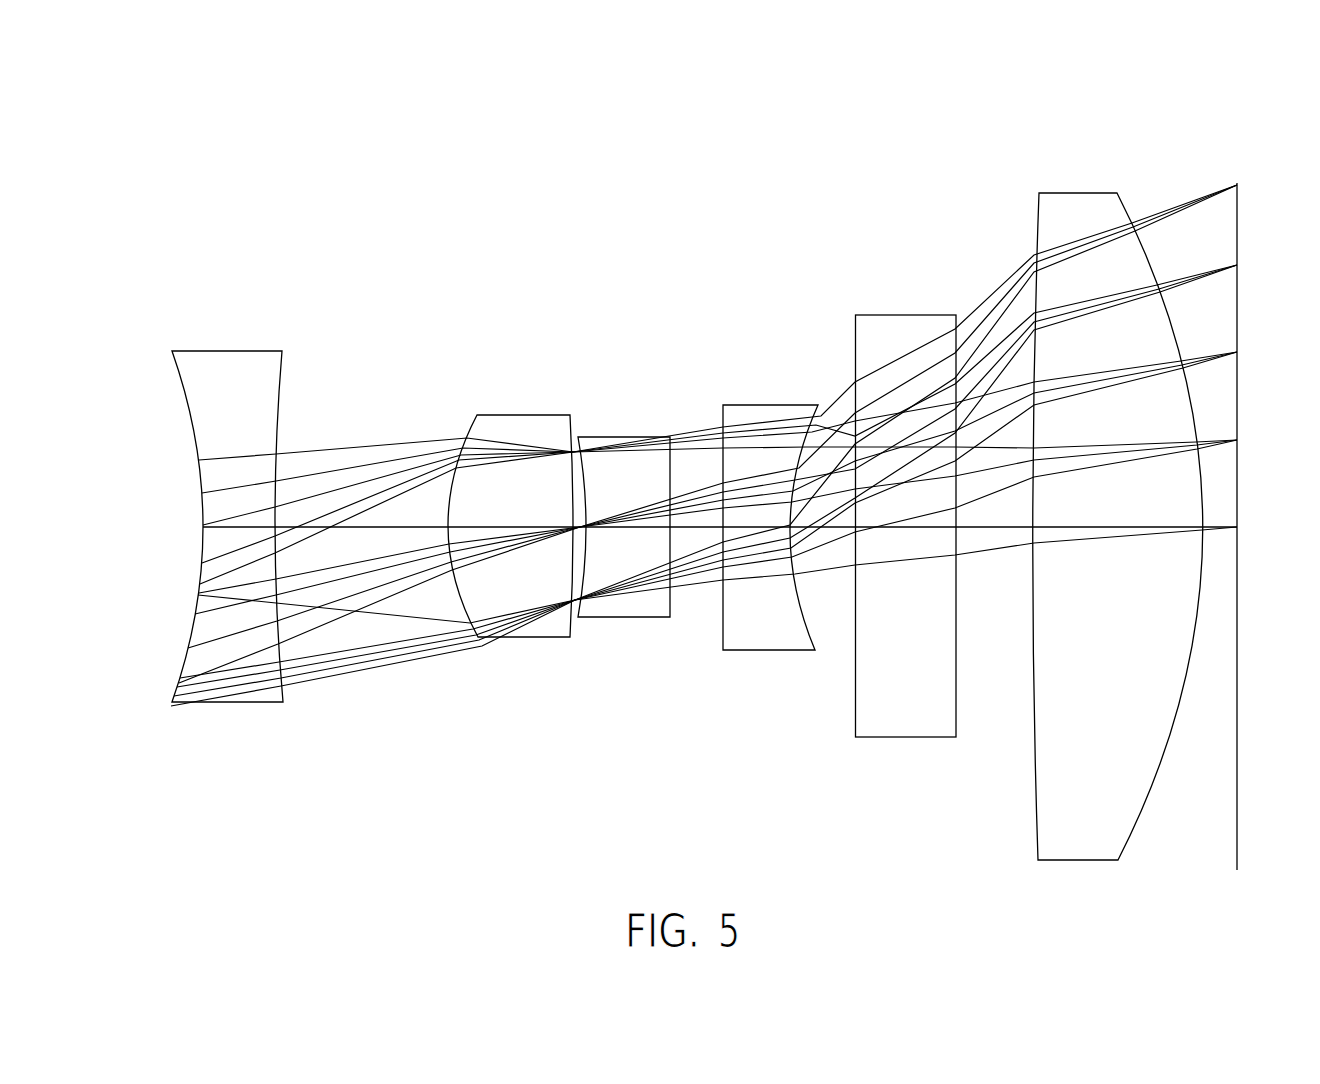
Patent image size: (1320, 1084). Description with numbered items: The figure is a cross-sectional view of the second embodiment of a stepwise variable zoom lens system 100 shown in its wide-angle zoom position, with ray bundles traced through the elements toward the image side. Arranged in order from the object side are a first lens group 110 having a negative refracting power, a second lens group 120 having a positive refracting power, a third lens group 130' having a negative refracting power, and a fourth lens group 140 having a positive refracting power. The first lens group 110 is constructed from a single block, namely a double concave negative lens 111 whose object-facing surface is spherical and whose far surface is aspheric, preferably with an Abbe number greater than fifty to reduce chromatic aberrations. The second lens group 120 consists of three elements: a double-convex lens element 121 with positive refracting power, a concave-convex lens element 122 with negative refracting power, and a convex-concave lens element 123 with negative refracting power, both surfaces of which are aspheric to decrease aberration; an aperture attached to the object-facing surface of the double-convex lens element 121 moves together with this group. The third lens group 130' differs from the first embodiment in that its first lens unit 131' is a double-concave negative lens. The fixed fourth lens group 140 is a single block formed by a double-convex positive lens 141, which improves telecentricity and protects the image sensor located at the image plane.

The stepwise variable zoom lens system 100 is at (256, 183).
The first lens group 110 is at (285, 344).
The double concave negative lens 111 is at (248, 703).
The second lens group 120 is at (803, 395).
The double-convex lens element 121 is at (527, 638).
The concave-convex lens element 122 is at (648, 618).
The convex-concave lens element 123 is at (787, 651).
The third lens group 130' is at (905, 554).
The first lens unit 131' is at (906, 582).
The fourth lens group 140 is at (1117, 191).
The double-convex positive lens 141 is at (1088, 861).